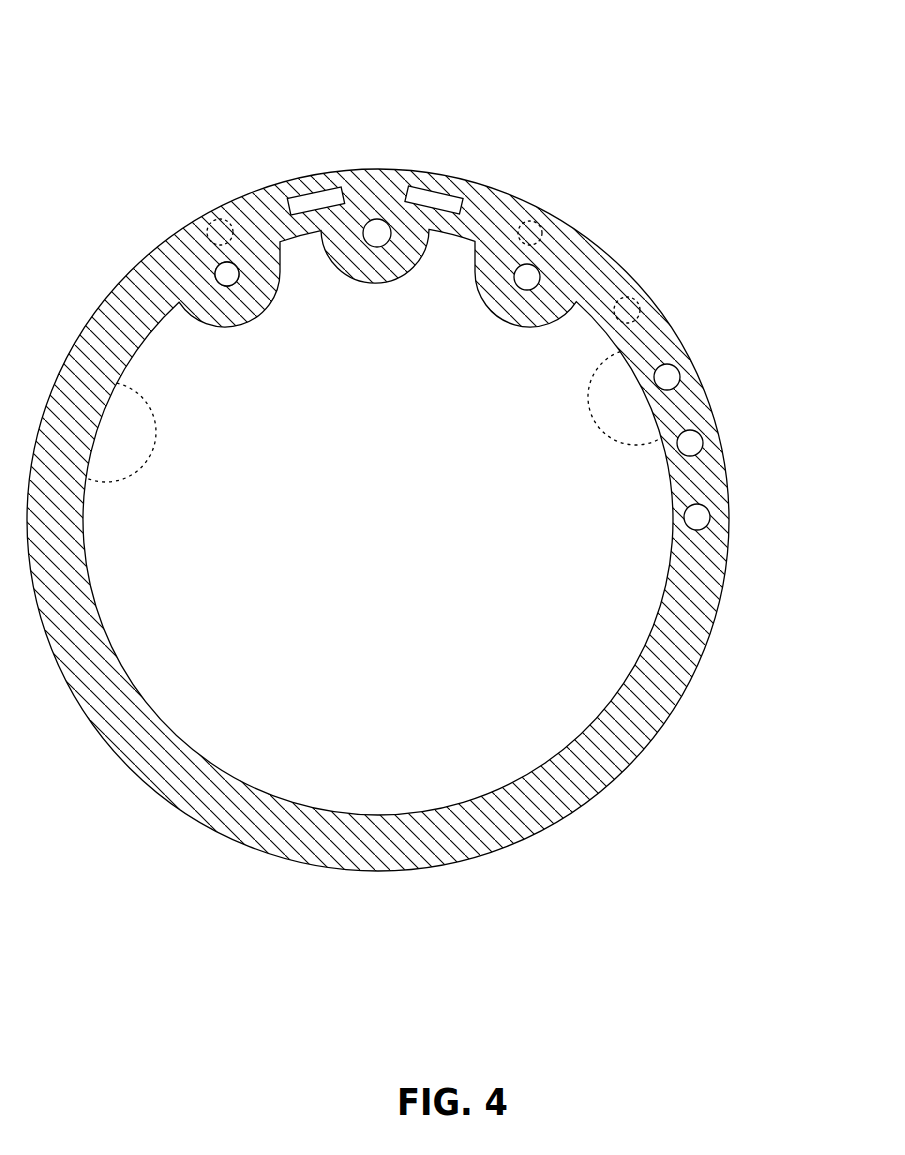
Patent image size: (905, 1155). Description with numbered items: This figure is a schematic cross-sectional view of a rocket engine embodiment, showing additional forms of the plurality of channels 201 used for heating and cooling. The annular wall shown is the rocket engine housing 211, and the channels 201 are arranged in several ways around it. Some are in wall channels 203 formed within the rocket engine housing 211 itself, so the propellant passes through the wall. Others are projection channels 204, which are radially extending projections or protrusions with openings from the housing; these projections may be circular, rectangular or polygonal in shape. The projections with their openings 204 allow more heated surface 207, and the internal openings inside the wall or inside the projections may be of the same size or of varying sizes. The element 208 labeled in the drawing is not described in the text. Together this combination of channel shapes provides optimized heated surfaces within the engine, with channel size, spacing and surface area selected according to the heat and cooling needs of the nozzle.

The plurality of channels 201 is at (226, 273).
The in wall channels 203 is at (312, 198).
The projection channels 204 is at (614, 405).
The heated surface 207 is at (380, 267).
The tubular body wall 208 is at (167, 692).
The rocket engine housing 211 is at (384, 848).